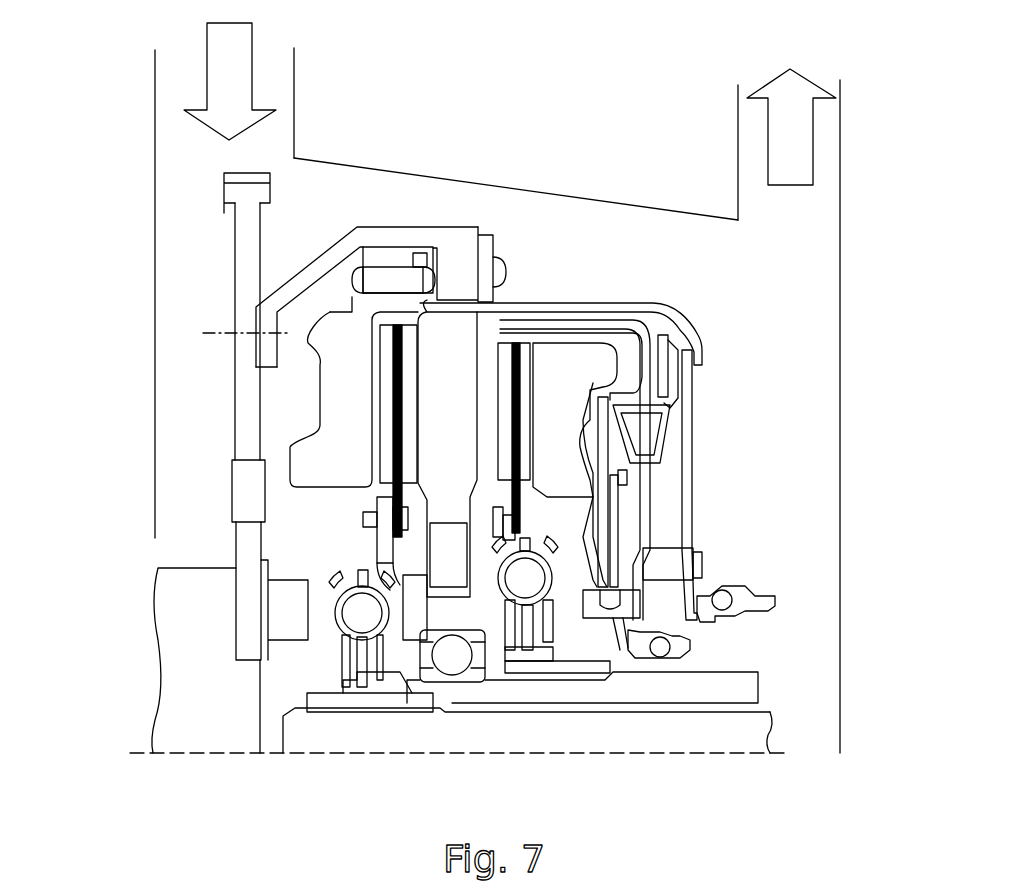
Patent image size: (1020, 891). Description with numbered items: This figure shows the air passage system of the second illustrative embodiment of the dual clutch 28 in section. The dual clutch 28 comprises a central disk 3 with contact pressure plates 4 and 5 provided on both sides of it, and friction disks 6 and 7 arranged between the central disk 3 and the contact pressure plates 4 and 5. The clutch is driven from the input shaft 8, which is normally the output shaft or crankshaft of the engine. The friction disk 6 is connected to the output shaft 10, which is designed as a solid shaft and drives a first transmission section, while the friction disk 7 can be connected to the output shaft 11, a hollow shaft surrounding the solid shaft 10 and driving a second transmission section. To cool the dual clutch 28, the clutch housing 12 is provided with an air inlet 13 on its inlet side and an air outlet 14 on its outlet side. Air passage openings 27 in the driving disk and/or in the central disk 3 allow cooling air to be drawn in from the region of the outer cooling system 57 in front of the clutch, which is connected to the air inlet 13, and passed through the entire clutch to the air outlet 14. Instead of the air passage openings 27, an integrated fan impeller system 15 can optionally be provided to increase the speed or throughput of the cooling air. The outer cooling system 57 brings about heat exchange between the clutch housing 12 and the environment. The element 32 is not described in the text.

The central disk 3 is at (422, 497).
The contact pressure plate 4 is at (322, 400).
The contact pressure plate 5 is at (590, 402).
The friction disk 6 is at (402, 392).
The friction disk 7 is at (520, 455).
The input shaft 8 is at (200, 702).
The output shaft 10 is at (370, 740).
The output shaft 11 is at (525, 737).
The clutch housing 12 is at (510, 186).
The air inlet 13 is at (193, 62).
The air outlet 14 is at (813, 150).
The integrated fan impeller system 15 is at (440, 547).
The air passage openings 27 is at (243, 502).
The dual clutch 28 is at (590, 302).
The roller 32 is at (377, 627).
The outer cooling system 57 is at (193, 160).